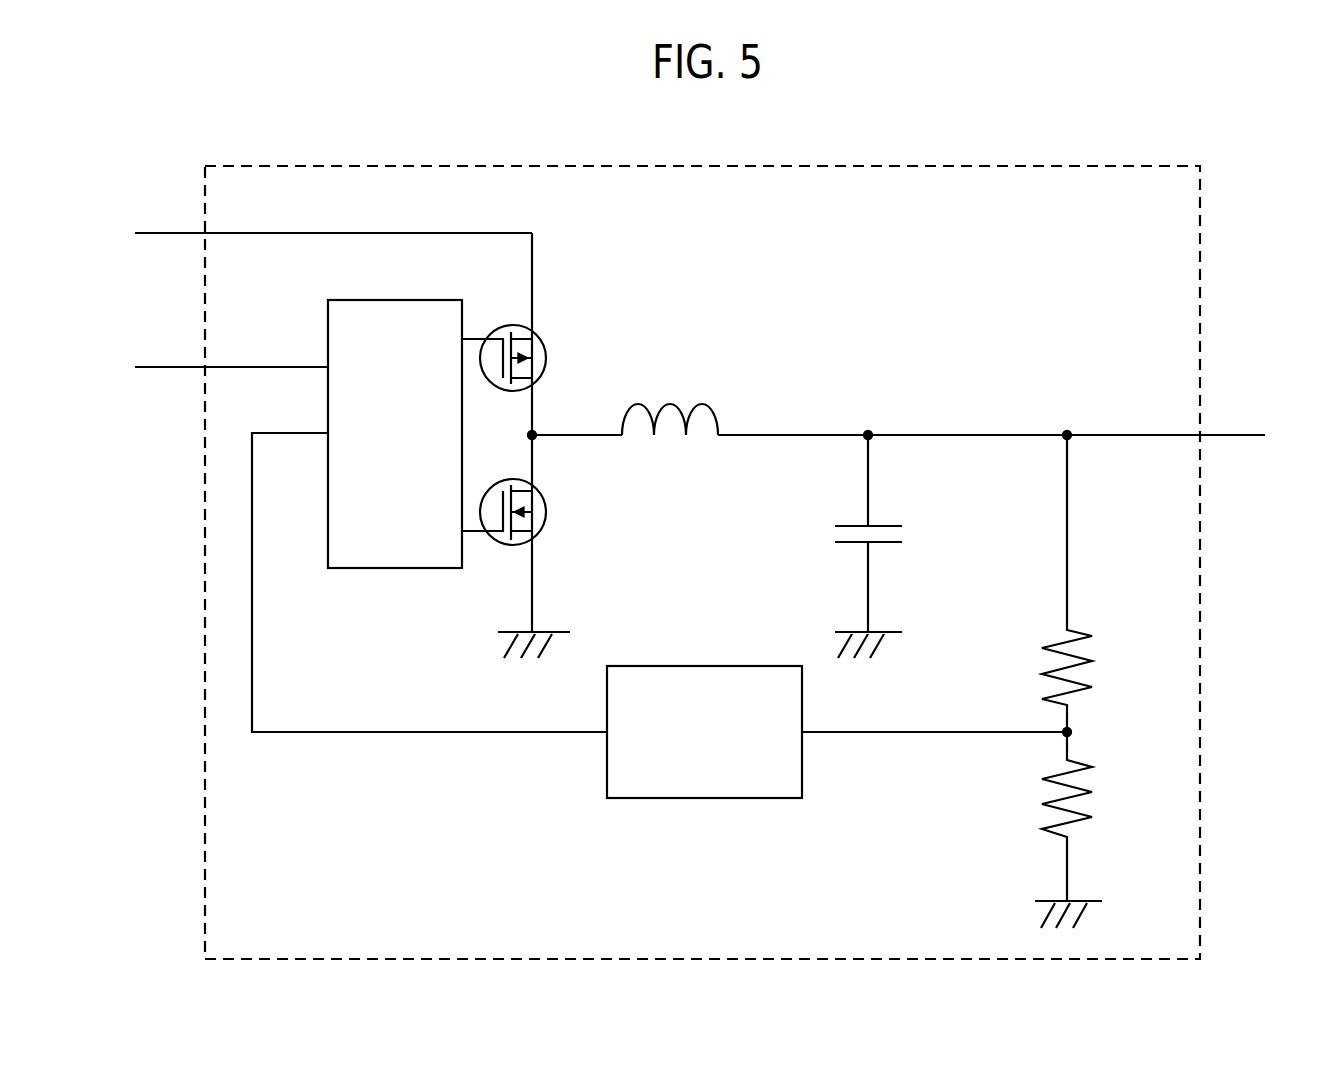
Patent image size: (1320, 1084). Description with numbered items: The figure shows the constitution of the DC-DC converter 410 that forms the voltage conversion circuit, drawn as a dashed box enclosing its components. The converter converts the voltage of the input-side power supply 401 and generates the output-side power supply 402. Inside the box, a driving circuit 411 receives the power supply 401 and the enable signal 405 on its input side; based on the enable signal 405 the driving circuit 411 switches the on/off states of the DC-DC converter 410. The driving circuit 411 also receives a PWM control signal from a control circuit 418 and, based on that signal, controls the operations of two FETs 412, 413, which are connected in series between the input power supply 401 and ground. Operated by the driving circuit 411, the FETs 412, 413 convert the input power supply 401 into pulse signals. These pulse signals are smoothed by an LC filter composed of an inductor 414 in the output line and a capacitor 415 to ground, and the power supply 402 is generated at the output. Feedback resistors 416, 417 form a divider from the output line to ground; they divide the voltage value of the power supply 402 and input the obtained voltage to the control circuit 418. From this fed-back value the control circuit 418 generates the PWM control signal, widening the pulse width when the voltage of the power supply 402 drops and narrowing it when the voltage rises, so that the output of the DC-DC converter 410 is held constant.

The power supply 401 is at (170, 232).
The power supply 402 is at (1233, 435).
The enable signal 405 is at (170, 366).
The DC-DC converter 410 is at (1134, 166).
The driving circuit 411 is at (416, 300).
The FET 412 is at (546, 353).
The FET 413 is at (546, 506).
The inductor 414 is at (708, 402).
The capacitor 415 is at (890, 526).
The feedback resistor 416 is at (1095, 647).
The feedback resistor 417 is at (1095, 775).
The control circuit 418 is at (735, 666).